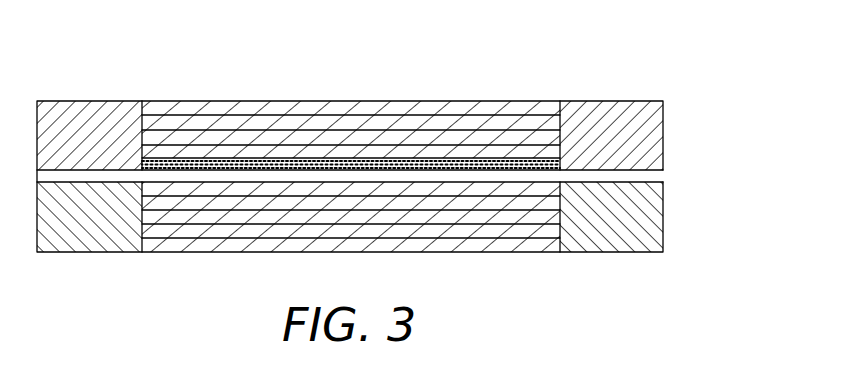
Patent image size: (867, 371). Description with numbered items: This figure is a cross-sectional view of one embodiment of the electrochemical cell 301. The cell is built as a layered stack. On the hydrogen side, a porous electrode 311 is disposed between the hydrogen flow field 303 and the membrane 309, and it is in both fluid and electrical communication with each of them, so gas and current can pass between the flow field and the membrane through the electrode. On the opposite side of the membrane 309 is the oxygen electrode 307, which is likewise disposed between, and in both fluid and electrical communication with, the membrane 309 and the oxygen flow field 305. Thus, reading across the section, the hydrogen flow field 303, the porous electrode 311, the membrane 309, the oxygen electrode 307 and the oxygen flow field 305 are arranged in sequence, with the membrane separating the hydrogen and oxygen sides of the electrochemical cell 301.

The electrochemical cell 301 is at (652, 82).
The hydrogen flow field 303 is at (192, 122).
The oxygen flow field 305 is at (298, 230).
The oxygen electrode 307 is at (318, 188).
The membrane 309 is at (650, 179).
The porous electrode 311 is at (257, 165).